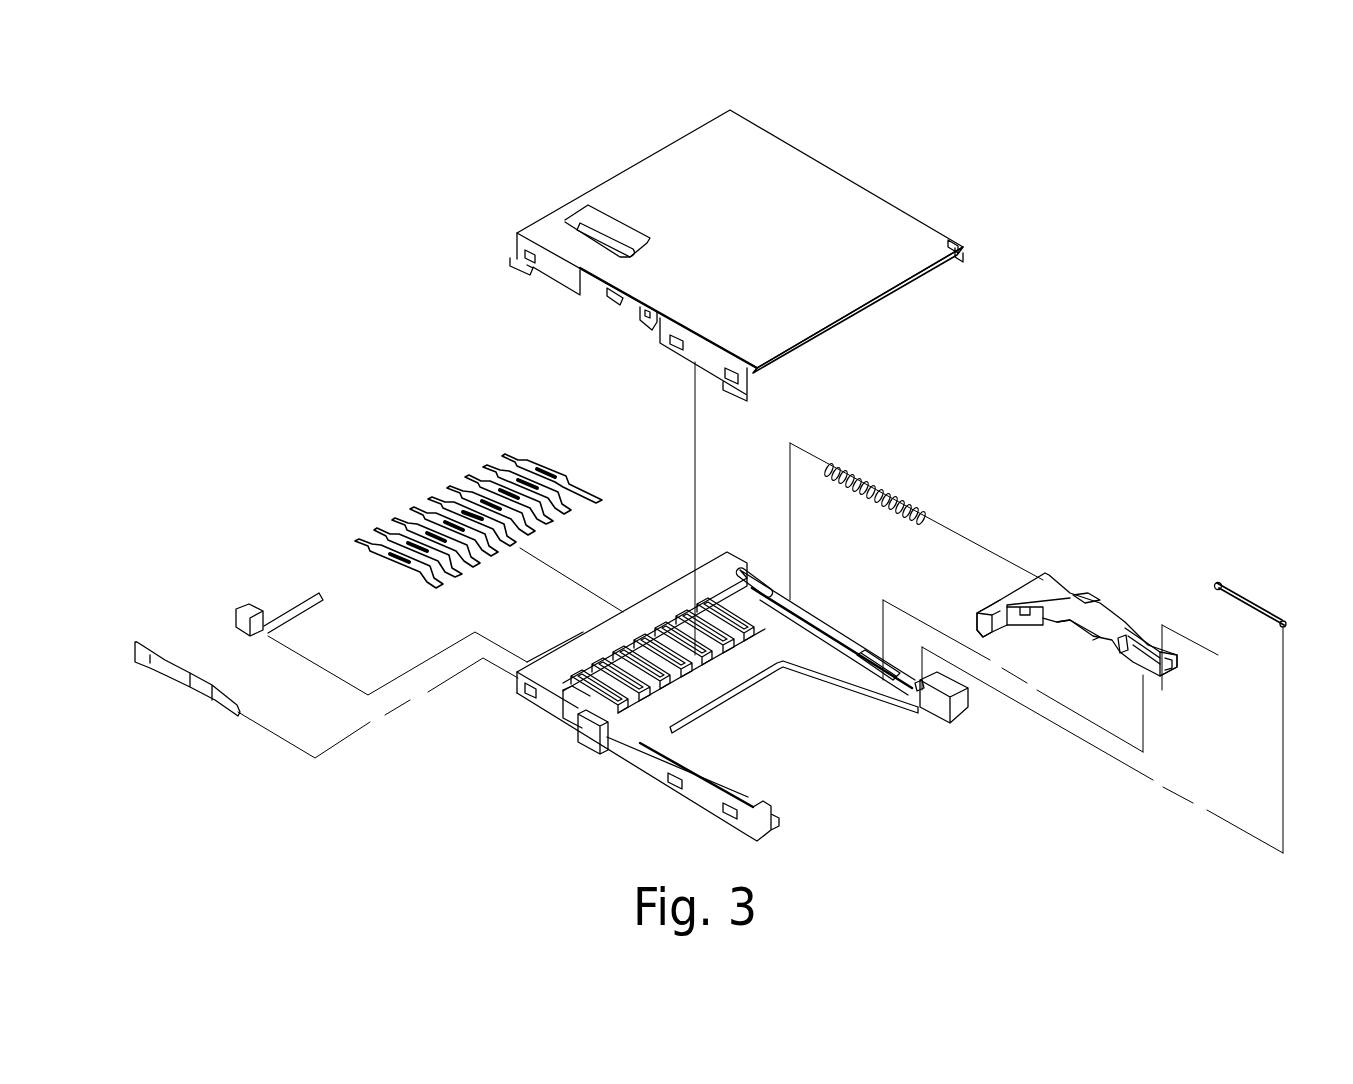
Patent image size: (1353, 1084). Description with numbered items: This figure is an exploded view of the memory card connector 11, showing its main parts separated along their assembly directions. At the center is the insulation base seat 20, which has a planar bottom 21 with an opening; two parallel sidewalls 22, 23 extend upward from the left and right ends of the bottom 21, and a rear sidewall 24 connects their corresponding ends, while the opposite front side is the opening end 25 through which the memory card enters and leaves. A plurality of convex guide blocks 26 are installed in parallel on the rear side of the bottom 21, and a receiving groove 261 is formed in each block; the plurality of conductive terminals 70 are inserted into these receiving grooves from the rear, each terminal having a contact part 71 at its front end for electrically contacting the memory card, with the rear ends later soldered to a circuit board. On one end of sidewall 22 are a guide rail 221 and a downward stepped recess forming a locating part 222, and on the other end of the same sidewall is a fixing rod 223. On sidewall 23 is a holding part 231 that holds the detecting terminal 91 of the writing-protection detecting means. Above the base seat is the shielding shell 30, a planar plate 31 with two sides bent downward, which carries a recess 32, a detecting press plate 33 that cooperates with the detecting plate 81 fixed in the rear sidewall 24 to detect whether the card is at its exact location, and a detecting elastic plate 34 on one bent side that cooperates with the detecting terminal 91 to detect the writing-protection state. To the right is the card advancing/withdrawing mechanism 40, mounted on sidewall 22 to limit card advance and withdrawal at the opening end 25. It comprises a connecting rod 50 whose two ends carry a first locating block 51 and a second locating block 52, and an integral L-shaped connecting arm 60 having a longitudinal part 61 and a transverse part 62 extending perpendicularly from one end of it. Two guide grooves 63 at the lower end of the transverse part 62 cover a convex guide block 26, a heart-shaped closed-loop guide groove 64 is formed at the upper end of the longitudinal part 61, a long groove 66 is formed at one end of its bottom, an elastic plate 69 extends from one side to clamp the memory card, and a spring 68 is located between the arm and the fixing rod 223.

The memory card connector 11 is at (1082, 330).
The insulation base seat 20 is at (738, 675).
The planar bottom 21 is at (825, 621).
The sidewall 22 is at (966, 727).
The sidewall 23 is at (655, 772).
The rear sidewall 24 is at (657, 597).
The opening end 25 is at (818, 765).
The convex guide blocks 26 is at (679, 682).
The guide rail 221 is at (867, 655).
The locating part 222 is at (918, 692).
The fixing rod 223 is at (768, 575).
The holding part 231 is at (575, 730).
The receiving groove 261 is at (702, 672).
The shielding shell 30 is at (745, 249).
The planar plate 31 is at (858, 277).
The recess 32 is at (905, 218).
The detecting press plate 33 is at (615, 235).
The detecting elastic plate 34 is at (625, 297).
The card advancing/withdrawing mechanism 40 is at (1073, 574).
The connecting rod 50 is at (1269, 595).
The first locating block 51 is at (1285, 630).
The second locating block 52 is at (1220, 595).
The connecting arm 60 is at (1027, 575).
The longitudinal part 61 is at (1077, 611).
The transverse part 62 is at (992, 605).
The guide grooves 63 is at (1020, 618).
The guide groove 64 is at (1127, 635).
The long groove 66 is at (1170, 672).
The spring 68 is at (878, 480).
The elastic plate 69 is at (1115, 638).
The conductive terminals 70 is at (505, 506).
The contact part 71 is at (597, 487).
The detecting plate 81 is at (252, 620).
The detecting terminal 91 is at (165, 668).